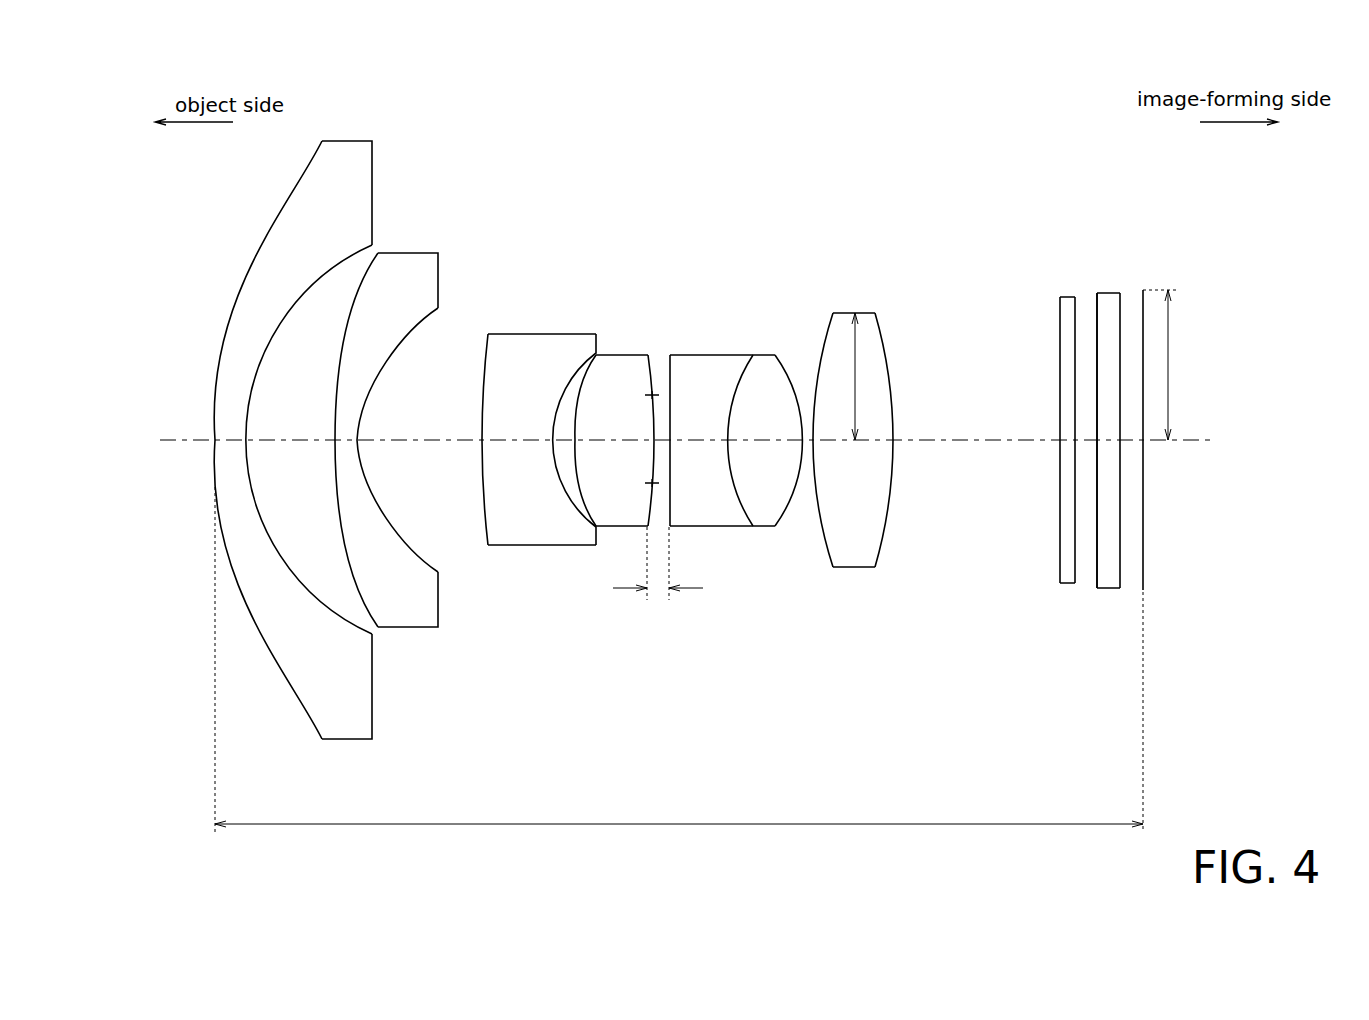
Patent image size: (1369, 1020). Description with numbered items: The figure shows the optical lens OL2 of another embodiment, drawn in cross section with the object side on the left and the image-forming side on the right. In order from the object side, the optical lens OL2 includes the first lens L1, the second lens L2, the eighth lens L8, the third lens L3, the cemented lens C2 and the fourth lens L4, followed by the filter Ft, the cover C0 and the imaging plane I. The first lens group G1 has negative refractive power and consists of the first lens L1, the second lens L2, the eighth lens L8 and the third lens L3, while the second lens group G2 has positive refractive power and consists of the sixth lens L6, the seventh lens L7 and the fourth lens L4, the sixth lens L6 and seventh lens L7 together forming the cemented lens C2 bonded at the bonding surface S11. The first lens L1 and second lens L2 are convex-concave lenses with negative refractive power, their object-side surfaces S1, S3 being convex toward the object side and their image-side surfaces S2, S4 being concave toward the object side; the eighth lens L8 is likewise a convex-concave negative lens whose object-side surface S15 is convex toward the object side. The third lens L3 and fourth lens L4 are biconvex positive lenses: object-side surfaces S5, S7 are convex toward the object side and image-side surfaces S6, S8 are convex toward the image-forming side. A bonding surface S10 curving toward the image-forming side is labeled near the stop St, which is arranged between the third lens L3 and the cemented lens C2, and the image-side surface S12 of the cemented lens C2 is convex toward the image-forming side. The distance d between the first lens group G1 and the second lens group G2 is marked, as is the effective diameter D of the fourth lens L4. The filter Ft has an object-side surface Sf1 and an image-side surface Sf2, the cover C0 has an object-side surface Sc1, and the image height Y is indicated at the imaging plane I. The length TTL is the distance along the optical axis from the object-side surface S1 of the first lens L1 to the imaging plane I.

The optical lens OL2 is at (110, 84).
The first lens group G1 is at (641, 597).
The second lens group G2 is at (740, 648).
The first lens L1 is at (345, 740).
The second lens L2 is at (408, 627).
The eighth lens L8 is at (540, 545).
The third lens L3 is at (617, 527).
The sixth lens L6 is at (708, 527).
The seventh lens L7 is at (762, 527).
The fourth lens L4 is at (855, 567).
The cemented lens C2 is at (703, 613).
The object-side surface of the first lens S1 is at (218, 327).
The image-side surface of the first lens S2 is at (307, 304).
The object-side surface of the second lens S3 is at (329, 367).
The image-side surface of the second lens S4 is at (429, 328).
The object-side surface of the eighth lens S15 is at (493, 337).
The object-side surface of the third lens S5 is at (557, 392).
The bonding surface S10 is at (658, 408).
The stop St is at (653, 393).
The image-side surface of the third lens S6 is at (668, 425).
The bonding surface S11 is at (747, 395).
The image-side surface of the cemented lens S12 is at (796, 358).
The object-side surface of the fourth lens S7 is at (821, 324).
The image-side surface of the fourth lens S8 is at (897, 340).
The effective diameter D is at (863, 376).
The distance d is at (658, 573).
The filter Ft is at (1067, 583).
The object-side surface of the filter Sf1 is at (1049, 307).
The image-side surface of the filter Sf2 is at (1084, 297).
The cover C0 is at (1108, 588).
The object-side surface of the cover Sc1 is at (1129, 300).
The imaging plane I is at (1143, 590).
The image height Y is at (1166, 365).
The length TTL is at (679, 672).